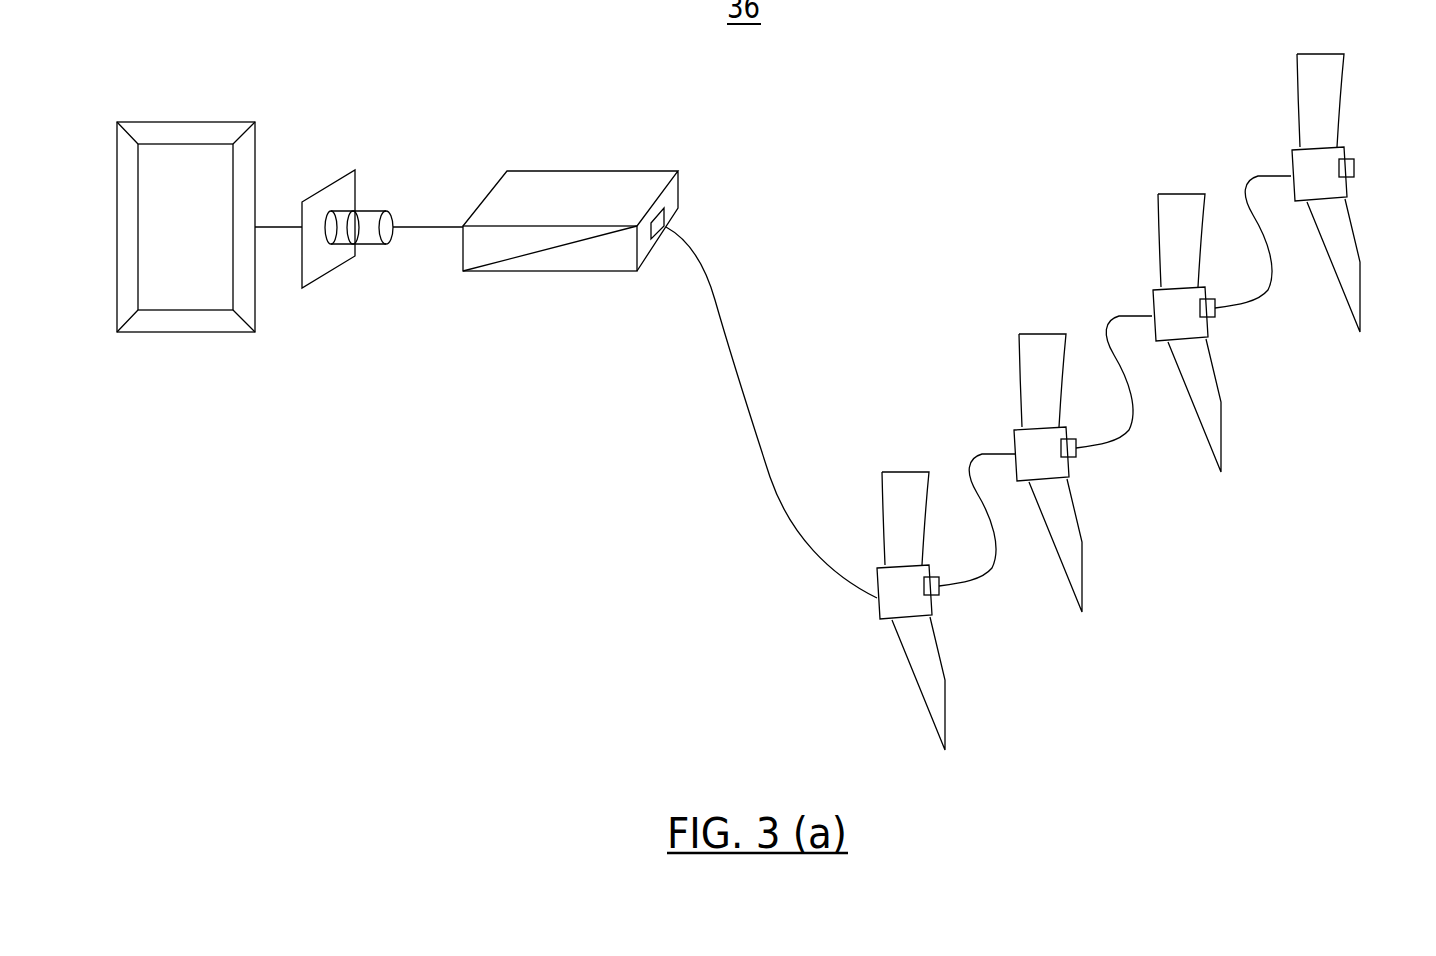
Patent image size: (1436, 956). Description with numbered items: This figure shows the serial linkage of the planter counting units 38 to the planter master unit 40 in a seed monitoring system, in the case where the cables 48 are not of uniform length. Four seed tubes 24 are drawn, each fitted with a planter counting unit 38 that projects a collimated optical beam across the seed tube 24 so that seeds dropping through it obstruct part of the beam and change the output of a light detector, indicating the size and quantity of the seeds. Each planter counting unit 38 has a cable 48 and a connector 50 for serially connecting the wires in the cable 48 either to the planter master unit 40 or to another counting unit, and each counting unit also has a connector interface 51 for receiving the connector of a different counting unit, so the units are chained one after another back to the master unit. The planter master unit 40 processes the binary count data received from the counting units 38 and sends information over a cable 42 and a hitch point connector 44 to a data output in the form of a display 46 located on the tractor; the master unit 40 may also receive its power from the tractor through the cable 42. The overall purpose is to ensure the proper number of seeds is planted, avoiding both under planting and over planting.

The display 46 is at (228, 120).
The hitch point connector 44 is at (373, 148).
The cable 42 is at (433, 222).
The planter master unit 40 is at (687, 167).
The connector 50 is at (665, 210).
The connector interface 51 is at (1360, 164).
The cable 48 is at (750, 413).
The planter counting unit 38 is at (875, 620).
The seed tube 24 is at (948, 712).